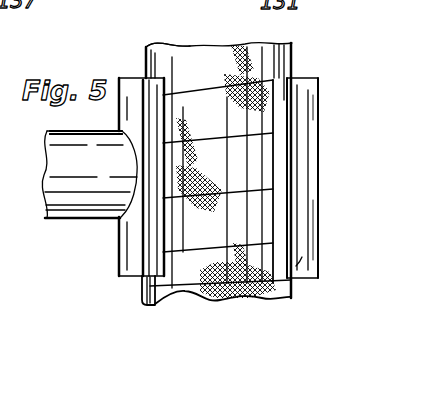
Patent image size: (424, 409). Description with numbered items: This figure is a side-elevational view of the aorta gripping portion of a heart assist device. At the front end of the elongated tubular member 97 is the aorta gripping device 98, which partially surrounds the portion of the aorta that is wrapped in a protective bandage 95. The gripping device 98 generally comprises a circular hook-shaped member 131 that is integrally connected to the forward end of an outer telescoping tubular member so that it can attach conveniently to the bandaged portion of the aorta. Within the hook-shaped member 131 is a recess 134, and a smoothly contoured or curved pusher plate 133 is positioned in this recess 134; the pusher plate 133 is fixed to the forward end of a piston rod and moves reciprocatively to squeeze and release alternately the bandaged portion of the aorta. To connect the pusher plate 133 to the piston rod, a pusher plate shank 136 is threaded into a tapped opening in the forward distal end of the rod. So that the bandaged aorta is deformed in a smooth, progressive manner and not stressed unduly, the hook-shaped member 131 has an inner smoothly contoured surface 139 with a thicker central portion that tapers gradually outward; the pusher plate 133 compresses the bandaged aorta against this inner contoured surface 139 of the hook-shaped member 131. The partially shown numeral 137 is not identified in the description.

The protective bandage 95 is at (207, 55).
The elongated tubular member 97 is at (88, 131).
The aorta gripping device 98 is at (110, 239).
The circular hook-shaped member 131 is at (296, 92).
The pusher plate 133 is at (165, 23).
The recess 134 is at (85, 65).
The pusher plate shank 136 is at (63, 193).
The rim band 137 is at (61, 67).
The inner smoothly contoured surface 139 is at (140, 285).